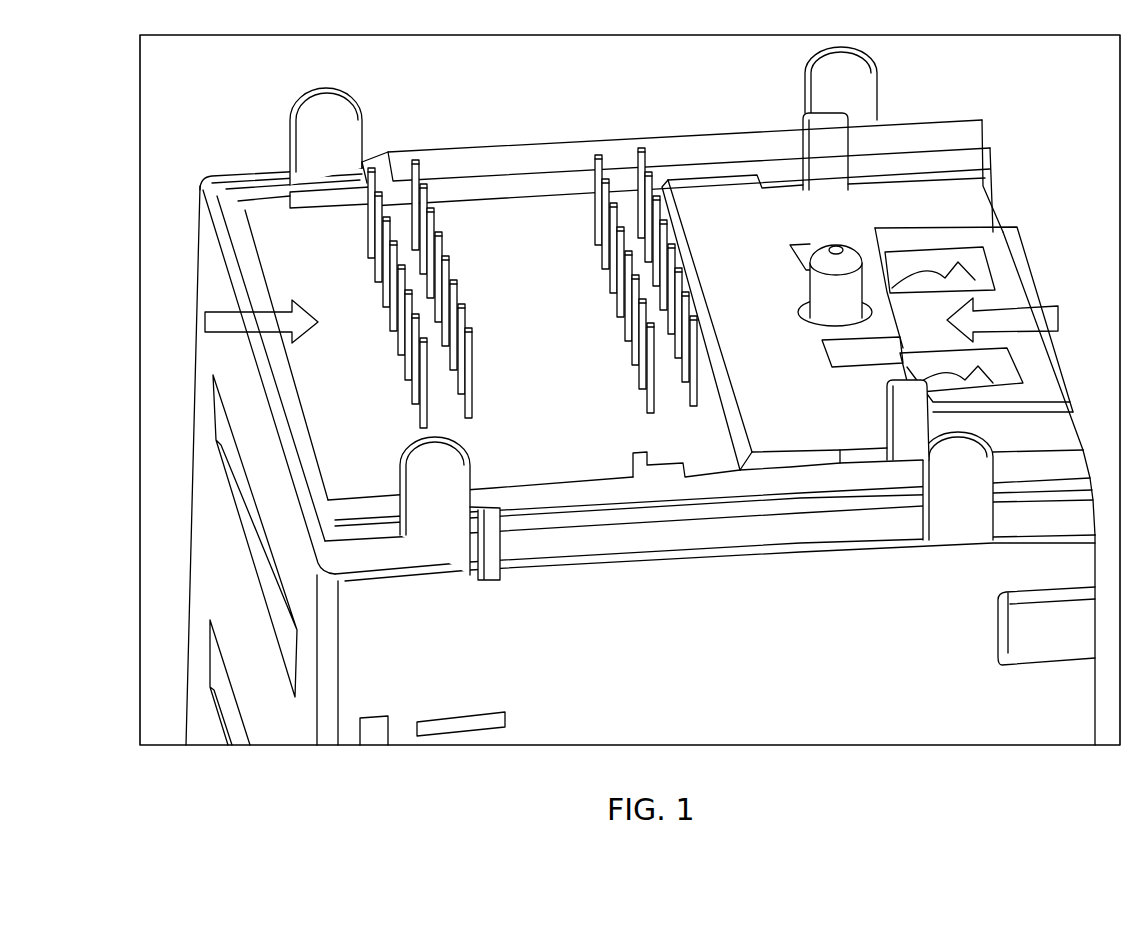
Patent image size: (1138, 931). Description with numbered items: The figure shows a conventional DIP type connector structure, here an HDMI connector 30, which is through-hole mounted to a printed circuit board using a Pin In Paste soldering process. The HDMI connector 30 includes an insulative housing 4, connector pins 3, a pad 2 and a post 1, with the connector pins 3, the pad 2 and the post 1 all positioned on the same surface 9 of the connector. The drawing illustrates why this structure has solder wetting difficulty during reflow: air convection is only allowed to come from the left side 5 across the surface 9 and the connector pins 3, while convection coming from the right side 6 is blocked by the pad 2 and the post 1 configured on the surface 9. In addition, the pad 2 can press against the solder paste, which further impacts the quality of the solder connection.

The HDMI connector 30 is at (1014, 146).
The surface 9 is at (492, 140).
The pad 2 is at (755, 378).
The connector pins 3 is at (368, 236).
The post 1 is at (810, 276).
The insulative housing 4 is at (305, 382).
The left side 5 is at (205, 323).
The right side 6 is at (1060, 318).